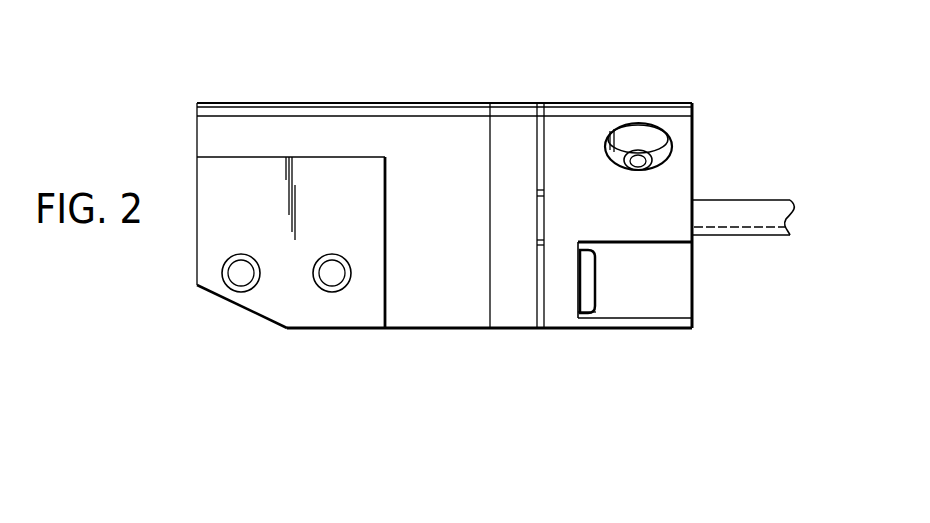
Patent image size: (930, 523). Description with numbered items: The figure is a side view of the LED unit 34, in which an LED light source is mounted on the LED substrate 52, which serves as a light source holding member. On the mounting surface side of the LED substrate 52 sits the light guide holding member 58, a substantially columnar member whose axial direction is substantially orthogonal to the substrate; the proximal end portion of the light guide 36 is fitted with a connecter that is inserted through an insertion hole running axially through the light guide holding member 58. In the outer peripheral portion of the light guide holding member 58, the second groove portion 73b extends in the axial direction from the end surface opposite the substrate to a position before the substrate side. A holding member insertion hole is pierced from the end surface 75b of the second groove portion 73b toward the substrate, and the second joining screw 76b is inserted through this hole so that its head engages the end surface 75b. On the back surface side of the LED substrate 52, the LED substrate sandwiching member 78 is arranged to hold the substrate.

The LED unit 34 is at (229, 67).
The light guide 36 is at (741, 196).
The LED substrate 52 is at (515, 120).
The light guide holding member 58 is at (573, 138).
The LED substrate sandwiching member 78 is at (427, 125).
The second groove portion 73b is at (683, 263).
The second joining screw 76b is at (588, 296).
The end surface of second groove portion 75b is at (582, 316).